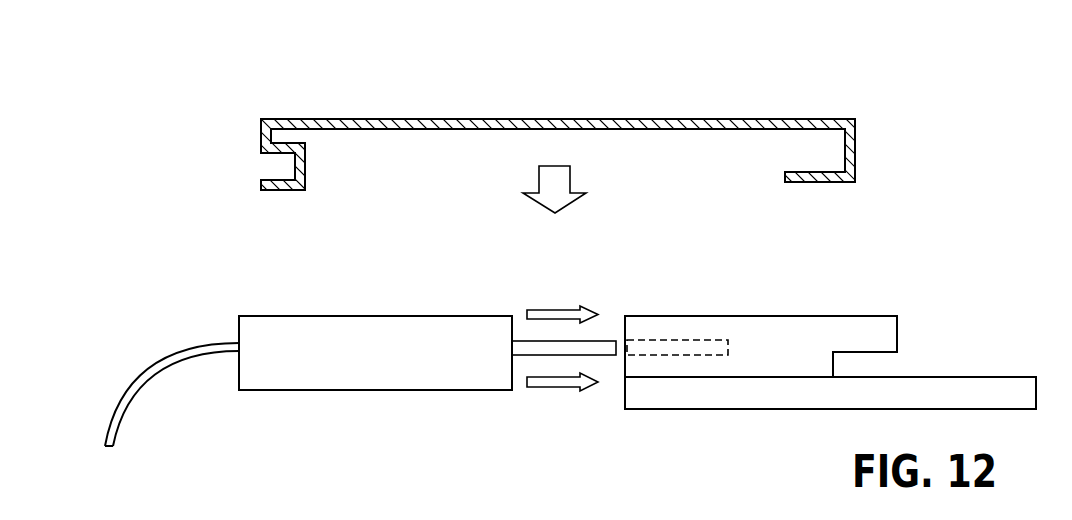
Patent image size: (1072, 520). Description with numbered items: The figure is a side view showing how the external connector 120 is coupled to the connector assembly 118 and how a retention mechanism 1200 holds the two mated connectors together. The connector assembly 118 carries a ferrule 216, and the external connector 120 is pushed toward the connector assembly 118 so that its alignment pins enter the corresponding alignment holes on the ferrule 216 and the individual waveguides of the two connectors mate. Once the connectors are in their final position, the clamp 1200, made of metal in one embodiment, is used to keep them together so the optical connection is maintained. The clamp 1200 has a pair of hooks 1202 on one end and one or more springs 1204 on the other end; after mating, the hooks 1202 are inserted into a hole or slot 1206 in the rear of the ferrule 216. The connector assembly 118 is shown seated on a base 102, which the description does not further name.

The retention mechanism 1200 is at (596, 100).
The spring 1204 is at (305, 185).
The hook 1202 is at (828, 182).
The connector assembly 118 is at (813, 292).
The external connector 120 is at (403, 359).
The ferrule 216 is at (770, 359).
The base 102 is at (848, 406).
The slot 1206 is at (872, 366).